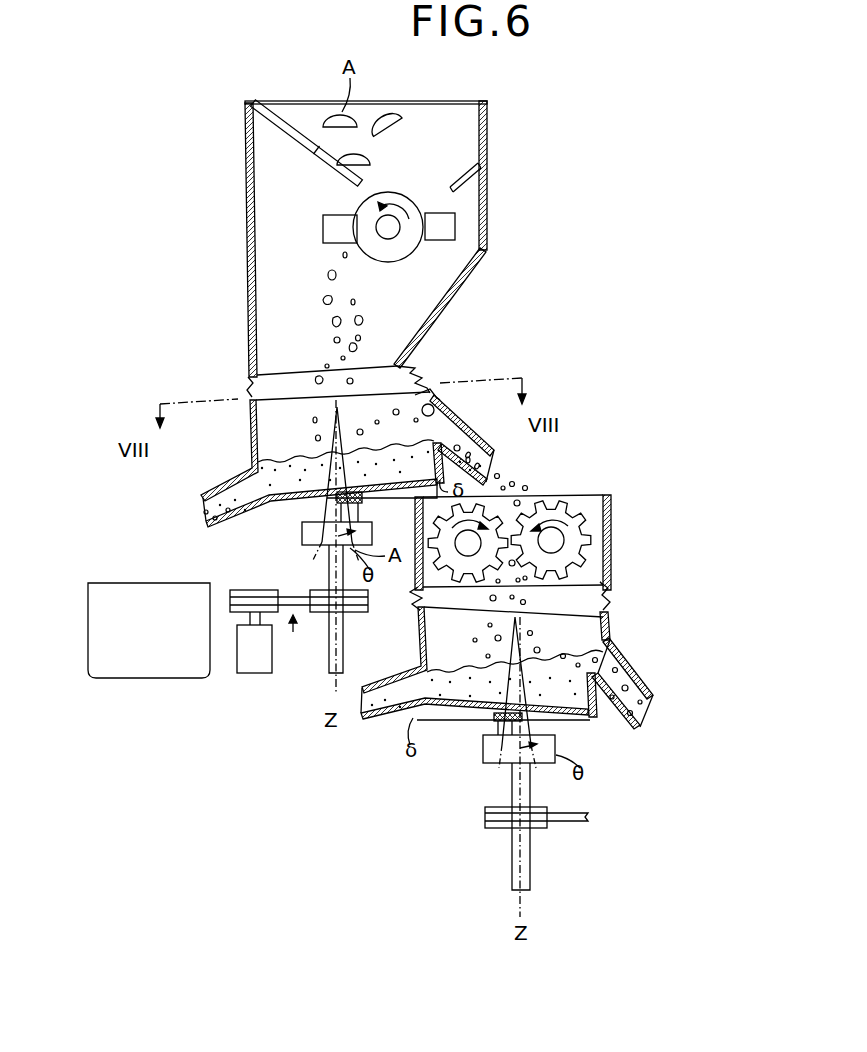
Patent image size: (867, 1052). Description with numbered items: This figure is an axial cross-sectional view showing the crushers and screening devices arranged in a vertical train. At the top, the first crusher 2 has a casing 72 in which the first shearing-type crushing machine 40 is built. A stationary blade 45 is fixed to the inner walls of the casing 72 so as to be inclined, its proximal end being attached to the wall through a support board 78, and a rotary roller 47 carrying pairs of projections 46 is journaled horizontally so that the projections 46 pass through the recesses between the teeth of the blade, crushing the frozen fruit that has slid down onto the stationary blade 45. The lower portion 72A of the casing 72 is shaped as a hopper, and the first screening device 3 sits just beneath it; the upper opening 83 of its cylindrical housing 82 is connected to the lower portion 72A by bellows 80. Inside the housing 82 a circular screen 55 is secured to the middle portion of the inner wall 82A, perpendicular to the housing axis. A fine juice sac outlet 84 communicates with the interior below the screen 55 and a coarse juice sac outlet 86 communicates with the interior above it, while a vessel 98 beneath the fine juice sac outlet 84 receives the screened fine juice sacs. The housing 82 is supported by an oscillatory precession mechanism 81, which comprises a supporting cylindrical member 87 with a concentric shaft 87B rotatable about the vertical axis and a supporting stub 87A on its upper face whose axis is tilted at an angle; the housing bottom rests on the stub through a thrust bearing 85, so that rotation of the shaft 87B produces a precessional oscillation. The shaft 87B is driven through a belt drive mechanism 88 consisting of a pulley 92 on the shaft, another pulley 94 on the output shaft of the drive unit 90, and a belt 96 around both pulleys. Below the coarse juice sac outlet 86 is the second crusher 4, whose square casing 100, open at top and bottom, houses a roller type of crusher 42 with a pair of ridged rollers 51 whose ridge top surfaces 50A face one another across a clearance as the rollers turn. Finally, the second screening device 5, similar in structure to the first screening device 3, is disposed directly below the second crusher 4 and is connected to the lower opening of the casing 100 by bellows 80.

The first crusher 2 is at (396, 239).
The casing 72 is at (488, 195).
The lower portion of the casing 72A is at (458, 306).
The support board 78 is at (302, 123).
The stationary blade 45 is at (321, 169).
The first shearing-type crushing machine 40 is at (362, 223).
The projections 46 is at (323, 232).
The rotary roller 47 is at (397, 262).
The bellows 80 is at (250, 388).
The first screening device 3 is at (417, 419).
The upper opening 83 is at (426, 385).
The inner wall 82A is at (445, 420).
The cylindrical housing 82 is at (252, 428).
The circular screen 55 is at (265, 460).
The fine juice sac outlet 84 is at (215, 490).
The coarse juice sac outlet 86 is at (470, 446).
The thrust bearing 85 is at (330, 498).
The supporting stub 87A is at (362, 506).
The supporting cylindrical member 87 is at (302, 533).
The oscillatory precession mechanism 81 is at (315, 695).
The pulley 92 is at (358, 606).
The pulley 94 is at (242, 590).
The belt 96 is at (296, 598).
The drive unit 90 is at (250, 672).
The vessel 98 is at (92, 628).
The belt drive mechanism 88 is at (299, 643).
The shaft 87B is at (328, 660).
The second crusher 4 is at (550, 509).
The casing 100 is at (612, 562).
The top surfaces of the ridges 50A is at (544, 505).
The roller type of crusher 42 is at (586, 515).
The rollers 51 is at (585, 504).
The second screening device 5 is at (610, 633).